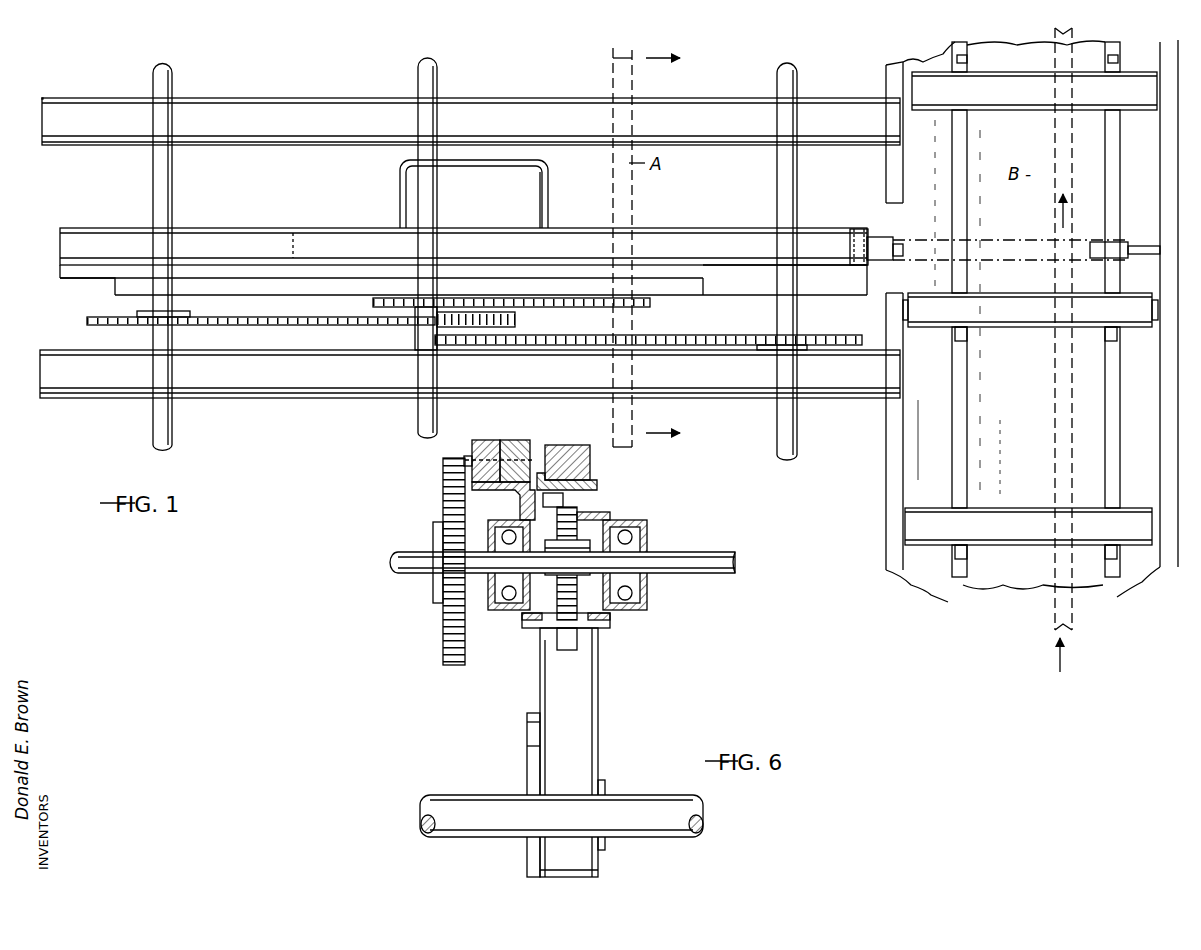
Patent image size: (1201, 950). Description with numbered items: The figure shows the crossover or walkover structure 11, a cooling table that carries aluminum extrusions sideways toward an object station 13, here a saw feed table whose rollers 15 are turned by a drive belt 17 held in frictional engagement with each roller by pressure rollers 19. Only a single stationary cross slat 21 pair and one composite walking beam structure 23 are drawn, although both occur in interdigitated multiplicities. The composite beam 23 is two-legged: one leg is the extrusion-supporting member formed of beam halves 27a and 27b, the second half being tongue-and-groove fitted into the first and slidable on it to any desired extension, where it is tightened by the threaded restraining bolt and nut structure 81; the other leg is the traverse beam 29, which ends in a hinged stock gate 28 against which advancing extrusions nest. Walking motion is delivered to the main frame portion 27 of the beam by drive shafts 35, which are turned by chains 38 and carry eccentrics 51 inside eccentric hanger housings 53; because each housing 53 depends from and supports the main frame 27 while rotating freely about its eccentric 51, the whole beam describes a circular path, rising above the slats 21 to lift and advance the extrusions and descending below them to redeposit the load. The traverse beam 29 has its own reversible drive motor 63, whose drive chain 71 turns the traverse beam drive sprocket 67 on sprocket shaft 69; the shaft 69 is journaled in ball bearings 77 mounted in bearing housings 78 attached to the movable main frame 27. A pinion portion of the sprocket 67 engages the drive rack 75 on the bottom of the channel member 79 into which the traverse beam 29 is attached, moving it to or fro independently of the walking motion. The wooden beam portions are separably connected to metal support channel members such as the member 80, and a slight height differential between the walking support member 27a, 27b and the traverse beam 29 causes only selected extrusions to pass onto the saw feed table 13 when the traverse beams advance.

In FIG. 1, the walkover or crossover structure 11 is at (262, 84).
In FIG. 1, the object or destination station 13 is at (921, 608).
In FIG. 1, the rollers 15 is at (1127, 302).
In FIG. 1, the drive belt 17 is at (1036, 347).
In FIG. 1, the pressure rollers 19 is at (1112, 52).
In FIG. 1, the stationary cross slats 21 is at (488, 106).
In FIG. 1, the composite walking beam structure 23 is at (301, 220).
In FIG. 1, the main frame portion 27 is at (765, 296).
In FIG. 6, the main frame portion 27 is at (615, 514).
In FIG. 1, the first beam half 27a is at (60, 276).
In FIG. 6, the first beam half 27a is at (483, 439).
In FIG. 1, the second beam half 27b is at (705, 289).
In FIG. 6, the second beam half 27b is at (512, 439).
In FIG. 1, the hinged stock gate 28 is at (890, 234).
In FIG. 1, the traverse beam 29 is at (678, 237).
In FIG. 6, the traverse beam 29 is at (580, 457).
In FIG. 1, the drive shaft 35 is at (162, 439).
In FIG. 6, the drive shaft 35 is at (635, 802).
In FIG. 1, the chains 38 is at (289, 321).
In FIG. 6, the eccentrics 51 is at (527, 731).
In FIG. 6, the eccentric hanger housing 53 is at (600, 706).
In FIG. 1, the reversible drive motor 63 is at (548, 194).
In FIG. 6, the traverse beam drive sprocket 67 is at (440, 640).
In FIG. 1, the sprocket shaft 69 is at (416, 419).
In FIG. 6, the sprocket shaft 69 is at (718, 557).
In FIG. 1, the drive chain 71 is at (553, 308).
In FIG. 6, the drive rack 75 is at (583, 498).
In FIG. 6, the ball bearings 77 is at (647, 528).
In FIG. 6, the bearing housings 78 is at (525, 628).
In FIG. 6, the channel member 79 is at (540, 480).
In FIG. 6, the metal support channel member 80 is at (497, 490).
In FIG. 6, the threaded restraining bolt and nut structure 81 is at (470, 449).